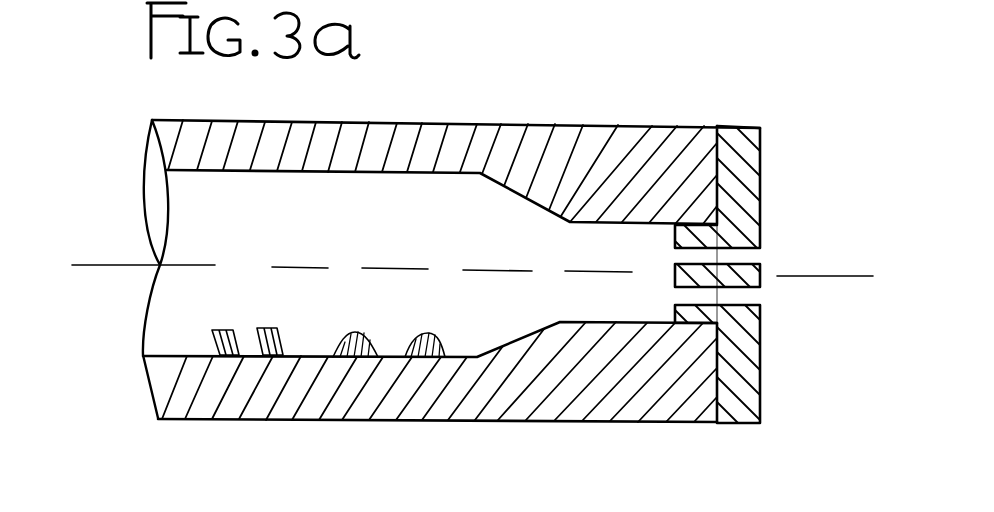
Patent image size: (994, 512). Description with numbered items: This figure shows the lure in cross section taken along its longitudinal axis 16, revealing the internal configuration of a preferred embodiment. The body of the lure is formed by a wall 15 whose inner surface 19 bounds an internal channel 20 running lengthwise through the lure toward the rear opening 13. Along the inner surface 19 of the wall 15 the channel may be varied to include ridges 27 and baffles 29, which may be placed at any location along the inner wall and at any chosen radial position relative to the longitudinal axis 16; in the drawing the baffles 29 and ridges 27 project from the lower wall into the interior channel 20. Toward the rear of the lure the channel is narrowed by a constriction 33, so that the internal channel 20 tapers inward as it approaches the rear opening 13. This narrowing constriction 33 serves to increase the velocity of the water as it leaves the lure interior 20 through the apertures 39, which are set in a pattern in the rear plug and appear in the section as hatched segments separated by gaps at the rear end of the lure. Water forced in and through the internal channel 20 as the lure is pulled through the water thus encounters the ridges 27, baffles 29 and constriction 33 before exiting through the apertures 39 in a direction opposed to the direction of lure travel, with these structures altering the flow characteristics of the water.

The rear opening 13 is at (648, 292).
The wall 15 is at (258, 393).
The longitudinal axis 16 is at (82, 266).
The inner surface 19 is at (170, 355).
The internal channel 20 is at (210, 218).
The ridges 27 is at (421, 330).
The baffles 29 is at (270, 330).
The constriction 33 is at (587, 290).
The apertures 39 is at (763, 257).